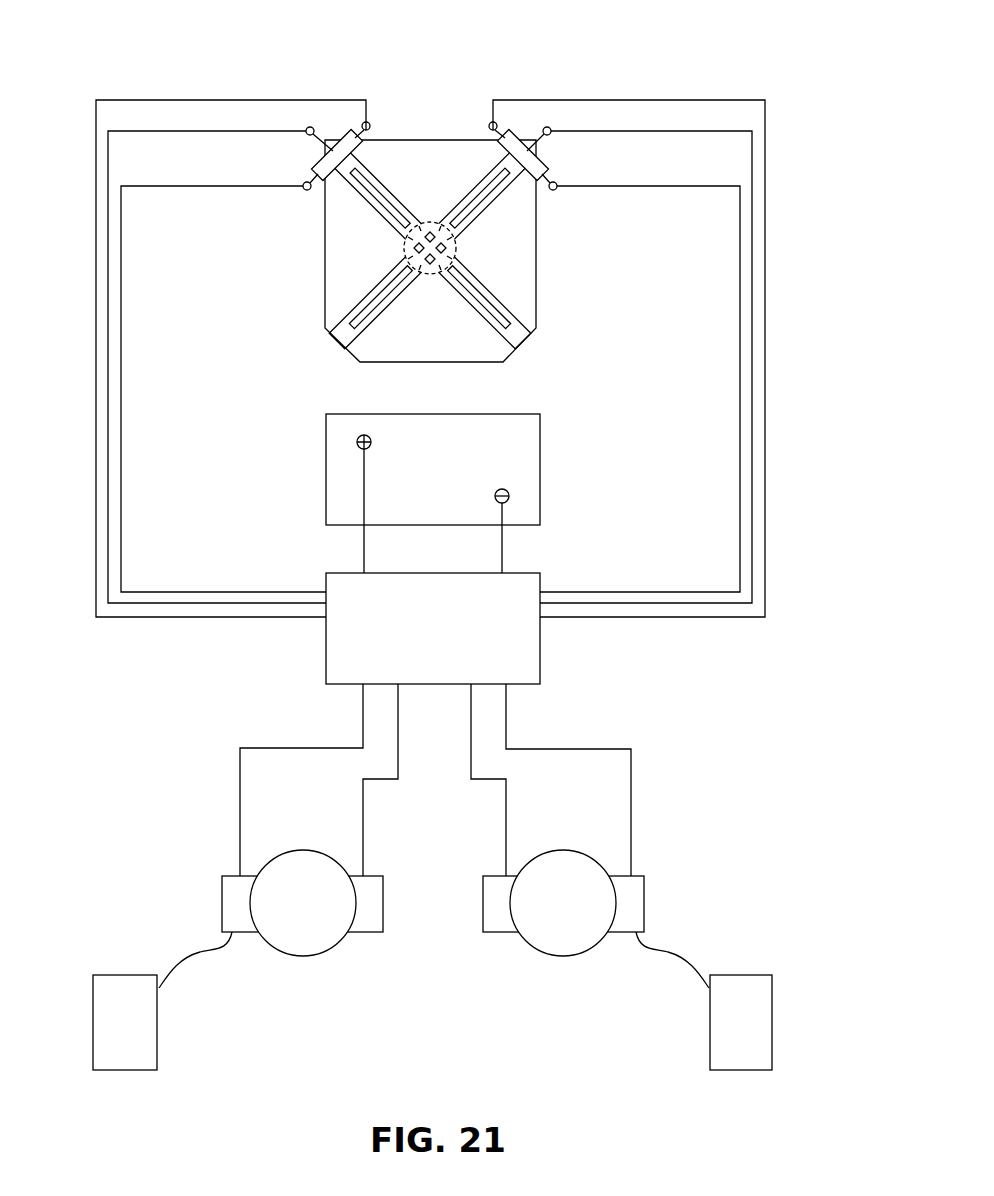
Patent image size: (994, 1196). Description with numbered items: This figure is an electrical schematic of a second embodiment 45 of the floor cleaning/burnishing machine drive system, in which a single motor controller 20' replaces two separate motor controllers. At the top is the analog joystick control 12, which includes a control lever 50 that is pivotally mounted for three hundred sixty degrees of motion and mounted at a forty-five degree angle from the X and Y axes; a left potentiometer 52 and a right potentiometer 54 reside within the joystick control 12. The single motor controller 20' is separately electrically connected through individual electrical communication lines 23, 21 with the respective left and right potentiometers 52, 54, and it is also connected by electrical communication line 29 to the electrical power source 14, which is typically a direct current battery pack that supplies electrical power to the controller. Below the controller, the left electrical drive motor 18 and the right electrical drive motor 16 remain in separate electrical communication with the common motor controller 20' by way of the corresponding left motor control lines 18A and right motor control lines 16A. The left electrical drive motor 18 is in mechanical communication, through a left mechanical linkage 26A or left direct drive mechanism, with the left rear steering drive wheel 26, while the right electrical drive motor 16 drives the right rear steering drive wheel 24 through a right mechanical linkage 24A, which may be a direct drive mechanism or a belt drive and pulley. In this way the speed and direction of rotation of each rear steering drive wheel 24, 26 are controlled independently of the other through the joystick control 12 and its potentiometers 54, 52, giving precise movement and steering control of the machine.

The second embodiment 45 is at (486, 65).
The analog joystick control 12 is at (536, 293).
The control lever 50 is at (456, 246).
The left potentiometer 52 is at (320, 162).
The right potentiometer 54 is at (540, 162).
The electrical communication line 23 is at (96, 386).
The electrical communication line 21 is at (765, 386).
The electrical power source 14 is at (542, 466).
The electrical communication line 29 is at (502, 549).
The single motor controller 20' is at (466, 615).
The left motor control lines 18A is at (363, 697).
The right motor control lines 16A is at (506, 697).
The left electrical drive motor 18 is at (303, 957).
The right electrical drive motor 16 is at (562, 957).
The left mechanical linkage 26A is at (198, 955).
The right mechanical linkage 24A is at (670, 955).
The left rear steering drive wheel 26 is at (128, 975).
The right rear steering drive wheel 24 is at (740, 975).